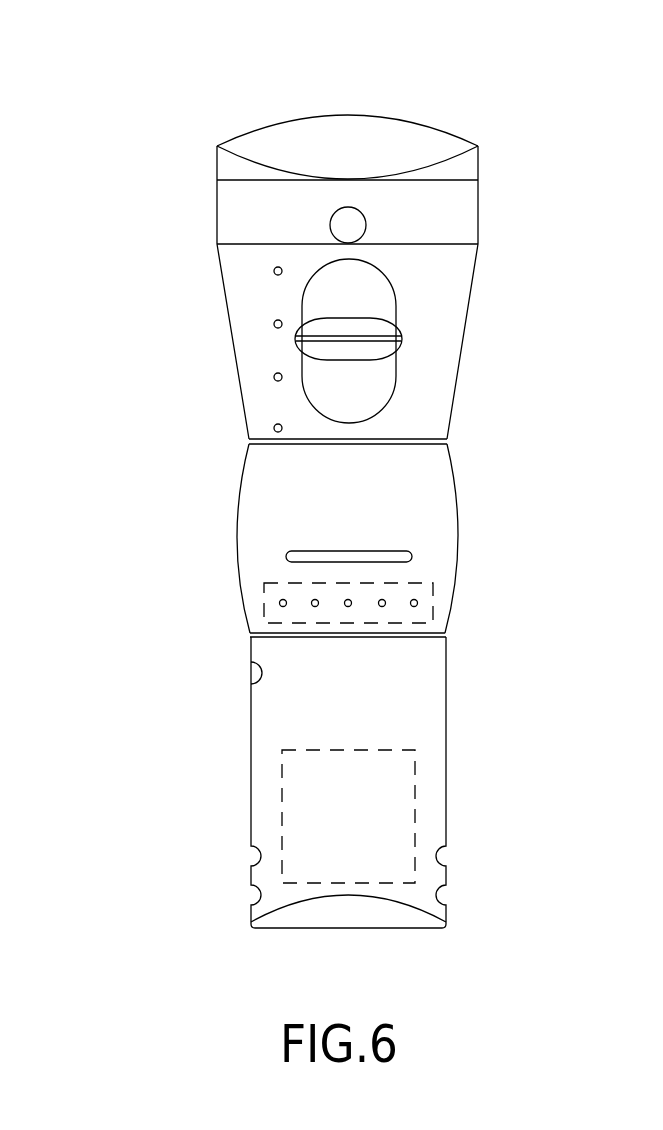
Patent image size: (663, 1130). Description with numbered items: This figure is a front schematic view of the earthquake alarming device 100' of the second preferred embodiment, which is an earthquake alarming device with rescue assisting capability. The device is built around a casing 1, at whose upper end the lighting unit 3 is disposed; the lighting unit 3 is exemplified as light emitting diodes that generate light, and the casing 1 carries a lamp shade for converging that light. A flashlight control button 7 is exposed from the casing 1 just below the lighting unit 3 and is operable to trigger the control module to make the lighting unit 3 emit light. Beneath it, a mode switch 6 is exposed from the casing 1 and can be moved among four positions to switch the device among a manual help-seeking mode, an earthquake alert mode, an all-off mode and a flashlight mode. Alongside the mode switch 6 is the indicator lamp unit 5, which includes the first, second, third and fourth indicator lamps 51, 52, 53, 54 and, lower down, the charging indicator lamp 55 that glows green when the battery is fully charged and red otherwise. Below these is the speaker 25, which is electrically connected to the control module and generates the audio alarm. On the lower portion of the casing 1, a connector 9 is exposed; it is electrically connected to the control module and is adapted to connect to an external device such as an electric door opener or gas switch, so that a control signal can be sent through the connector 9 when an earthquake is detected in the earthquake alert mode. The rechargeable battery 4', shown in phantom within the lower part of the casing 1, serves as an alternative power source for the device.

The earthquake alarming device 100' is at (302, 468).
The lighting unit 3 is at (353, 148).
The flashlight control button 7 is at (348, 225).
The casing 1 is at (455, 518).
The mode switch 6 is at (405, 364).
The indicator lamp unit 5 is at (128, 262).
The first indicator lamp 51 is at (273, 271).
The second indicator lamp 52 is at (273, 324).
The third indicator lamp 53 is at (273, 377).
The fourth indicator lamp 54 is at (273, 428).
The charging indicator lamp 55 is at (288, 556).
The speaker 25 is at (433, 603).
The connector 9 is at (253, 675).
The rechargeable battery 4' is at (408, 816).